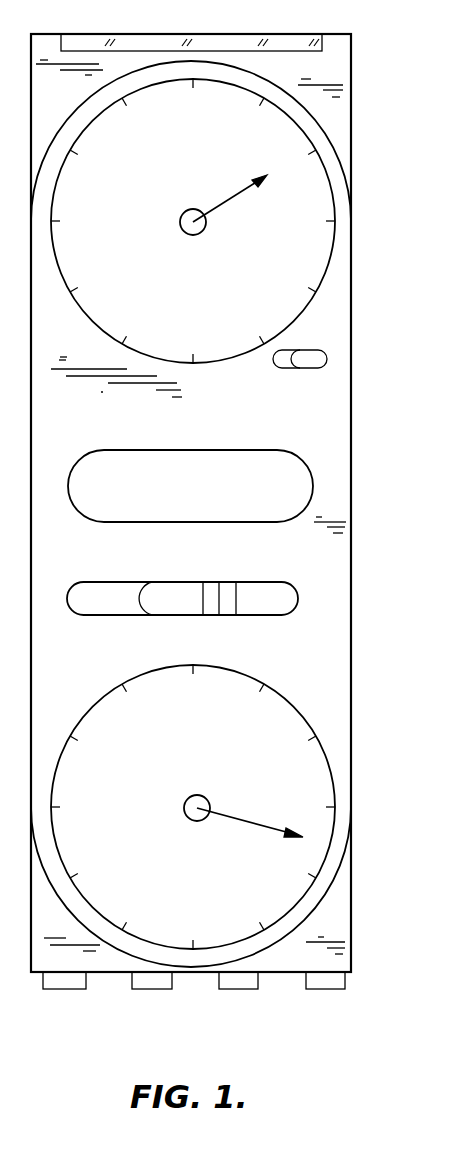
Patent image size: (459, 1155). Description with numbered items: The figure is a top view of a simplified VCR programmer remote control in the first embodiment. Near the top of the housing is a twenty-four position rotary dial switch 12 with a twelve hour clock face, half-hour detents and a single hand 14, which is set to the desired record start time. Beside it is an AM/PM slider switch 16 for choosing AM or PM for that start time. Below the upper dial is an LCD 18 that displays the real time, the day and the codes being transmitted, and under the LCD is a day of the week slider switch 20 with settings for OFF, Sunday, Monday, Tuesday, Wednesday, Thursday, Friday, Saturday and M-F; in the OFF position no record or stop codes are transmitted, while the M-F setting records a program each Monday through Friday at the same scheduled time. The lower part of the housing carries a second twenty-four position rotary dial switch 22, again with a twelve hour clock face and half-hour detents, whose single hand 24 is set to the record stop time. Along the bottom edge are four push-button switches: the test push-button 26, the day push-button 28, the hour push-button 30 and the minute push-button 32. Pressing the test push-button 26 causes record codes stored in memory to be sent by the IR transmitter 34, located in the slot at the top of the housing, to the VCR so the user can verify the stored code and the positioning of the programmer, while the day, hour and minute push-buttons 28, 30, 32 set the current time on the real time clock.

The rotary dial switch 12 is at (303, 188).
The single hand 14 is at (230, 202).
The AM/PM slider switch 16 is at (320, 357).
The LCD 18 is at (283, 492).
The day of the week slider switch 20 is at (283, 600).
The rotary dial switch 22 is at (283, 735).
The single hand 24 is at (257, 822).
The test push-button 26 is at (72, 989).
The day push-button 28 is at (157, 989).
The hour push-button 30 is at (247, 989).
The minute push-button 32 is at (328, 989).
The IR transmitter 34 is at (81, 41).